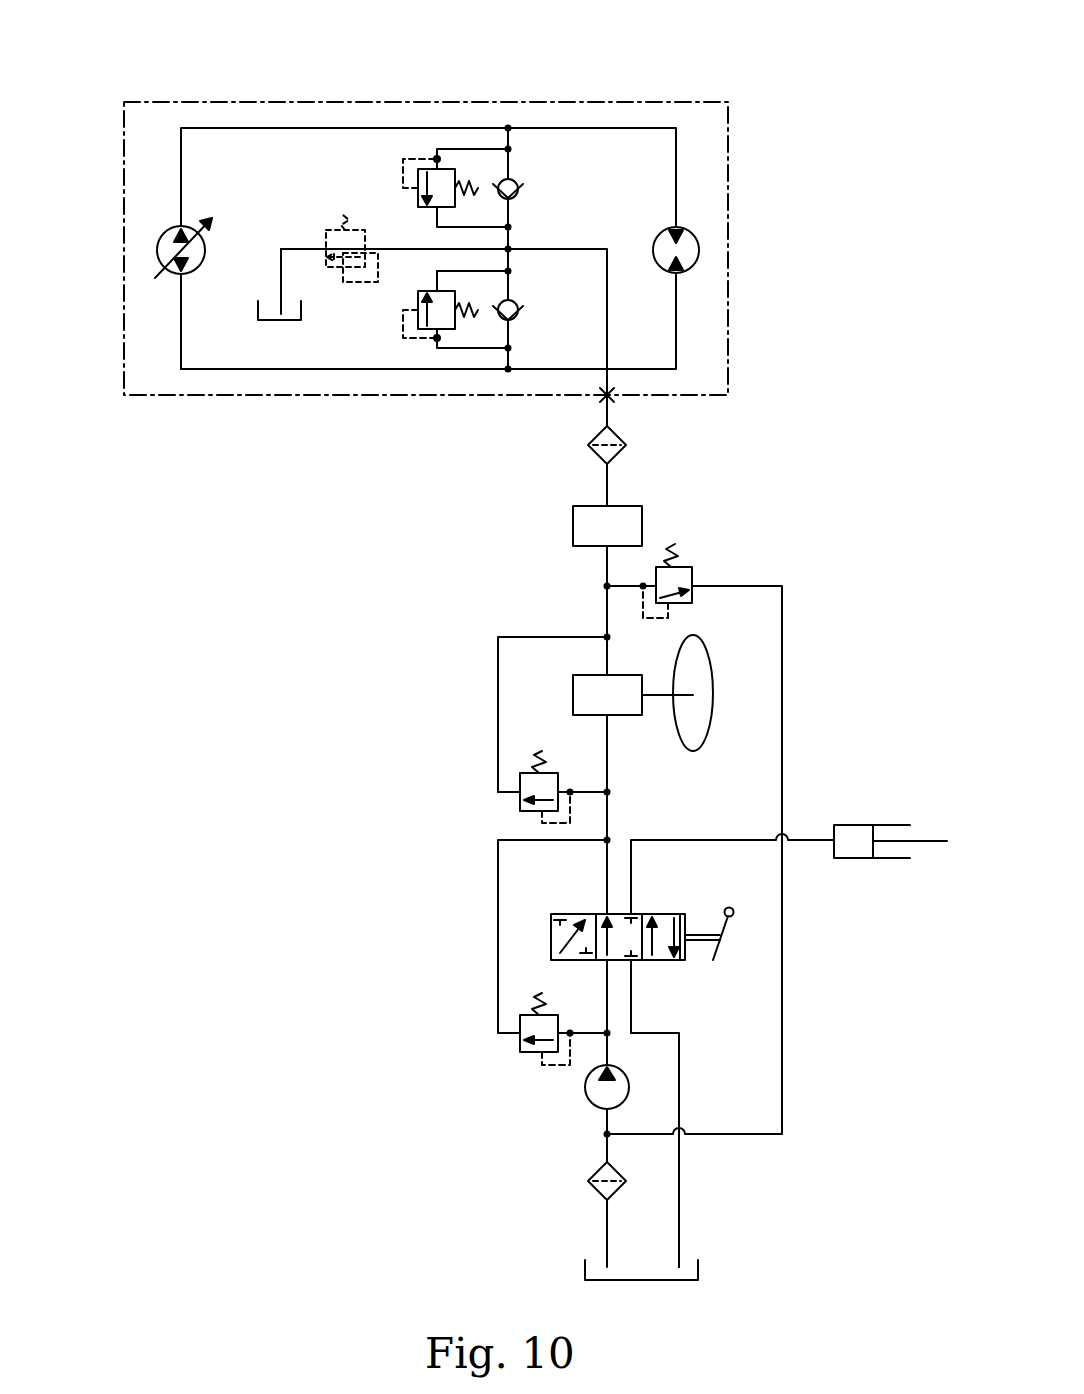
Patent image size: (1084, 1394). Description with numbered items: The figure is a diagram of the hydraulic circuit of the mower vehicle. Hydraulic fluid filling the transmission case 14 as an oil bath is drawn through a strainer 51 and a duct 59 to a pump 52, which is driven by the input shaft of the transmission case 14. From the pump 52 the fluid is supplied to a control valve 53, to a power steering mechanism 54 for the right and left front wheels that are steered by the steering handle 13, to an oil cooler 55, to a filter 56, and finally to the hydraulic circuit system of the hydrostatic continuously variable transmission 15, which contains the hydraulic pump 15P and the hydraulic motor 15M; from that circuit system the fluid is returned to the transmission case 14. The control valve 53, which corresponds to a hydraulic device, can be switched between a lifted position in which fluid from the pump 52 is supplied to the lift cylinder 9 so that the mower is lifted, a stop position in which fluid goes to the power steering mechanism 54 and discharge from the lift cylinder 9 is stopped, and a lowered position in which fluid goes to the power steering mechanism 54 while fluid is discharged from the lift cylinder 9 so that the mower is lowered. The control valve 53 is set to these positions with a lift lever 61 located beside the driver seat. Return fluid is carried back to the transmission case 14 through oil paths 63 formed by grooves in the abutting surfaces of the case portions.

The hydrostatic continuously variable transmission 15 is at (397, 100).
The hydraulic pump 15P is at (156, 250).
The hydraulic motor 15M is at (699, 249).
The transmission case 14 is at (303, 310).
The filter 56 is at (592, 456).
The oil cooler 55 is at (607, 526).
The power steering mechanism 54 is at (607, 695).
The steering handle 13 is at (712, 726).
The lift cylinder 9 is at (857, 825).
The control valve 53 is at (663, 912).
The lift lever 61 is at (724, 922).
The pump 52 is at (586, 1097).
The duct 59 is at (605, 1155).
The strainer 51 is at (596, 1193).
The oil path 63 is at (681, 1188).